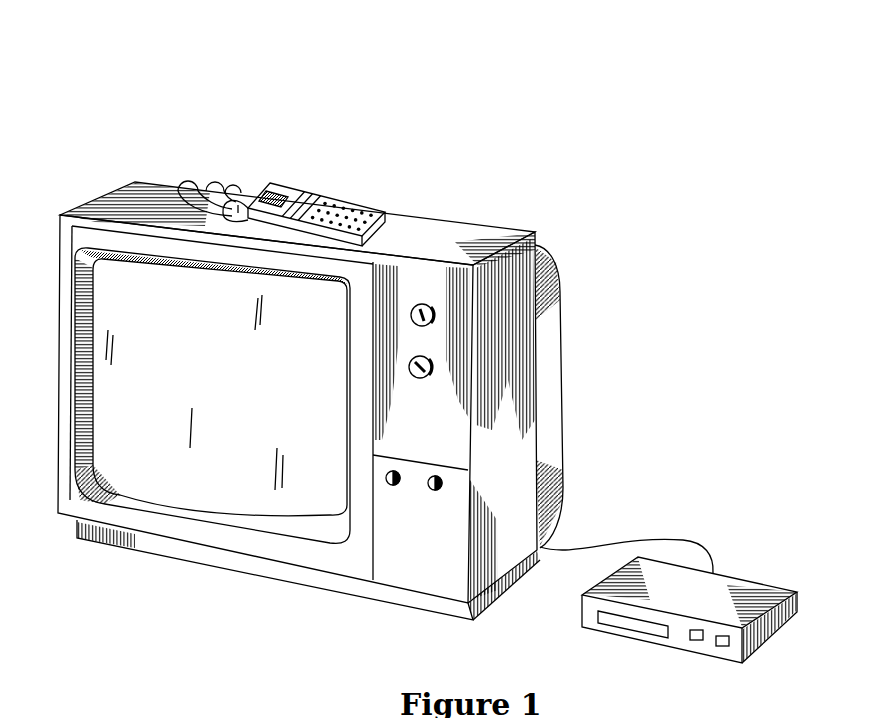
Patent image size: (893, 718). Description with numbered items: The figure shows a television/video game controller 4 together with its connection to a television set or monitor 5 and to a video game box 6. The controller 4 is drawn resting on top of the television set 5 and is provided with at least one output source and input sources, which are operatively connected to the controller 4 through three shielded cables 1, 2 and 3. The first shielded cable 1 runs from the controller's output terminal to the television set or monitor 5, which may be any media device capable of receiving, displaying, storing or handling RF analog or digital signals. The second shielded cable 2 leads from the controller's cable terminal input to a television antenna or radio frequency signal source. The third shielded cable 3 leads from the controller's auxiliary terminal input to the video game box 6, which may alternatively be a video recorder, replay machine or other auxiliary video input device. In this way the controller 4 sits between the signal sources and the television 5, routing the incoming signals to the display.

The shielded cable 1 is at (188, 180).
The shielded cable 2 is at (212, 185).
The shielded cable 3 is at (233, 190).
The television/video game controller 4 is at (340, 212).
The television set or monitor 5 is at (445, 240).
The video game box 6 is at (722, 602).